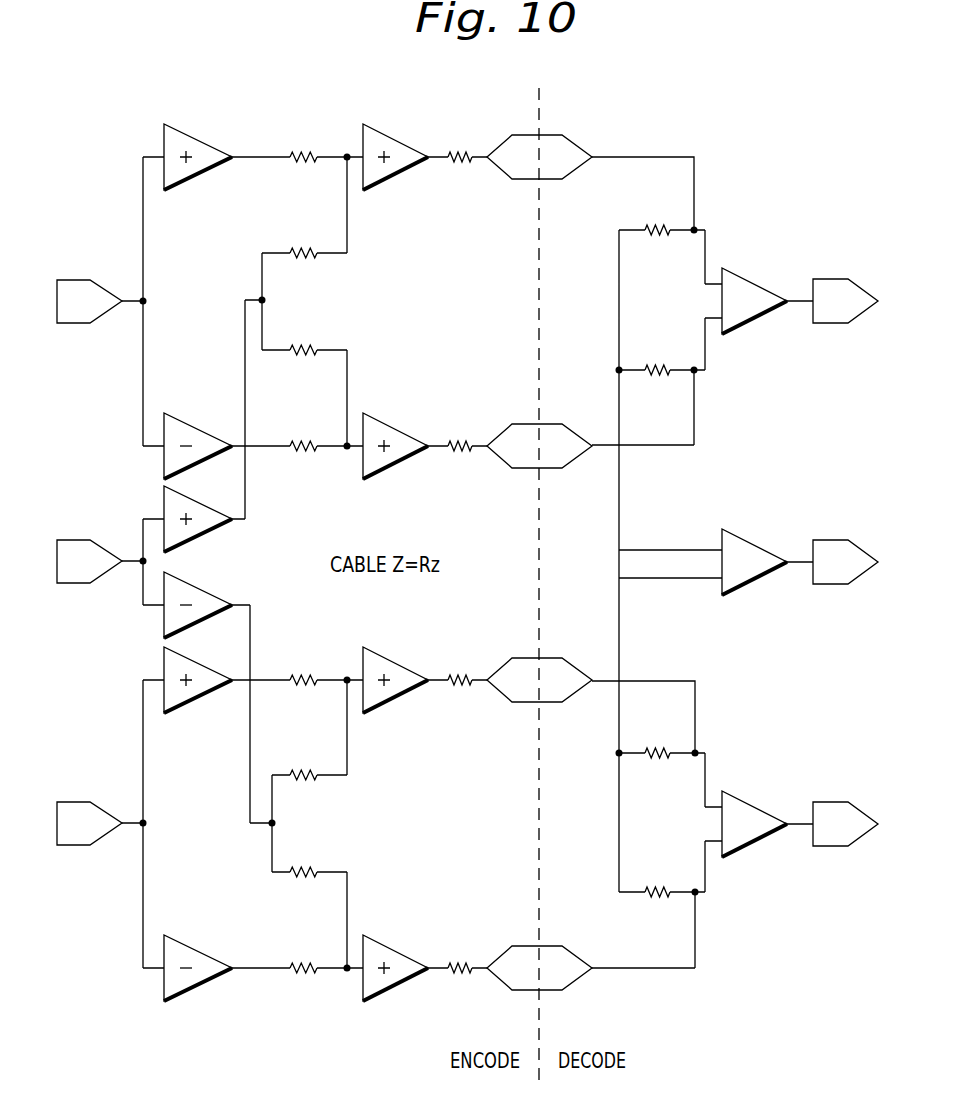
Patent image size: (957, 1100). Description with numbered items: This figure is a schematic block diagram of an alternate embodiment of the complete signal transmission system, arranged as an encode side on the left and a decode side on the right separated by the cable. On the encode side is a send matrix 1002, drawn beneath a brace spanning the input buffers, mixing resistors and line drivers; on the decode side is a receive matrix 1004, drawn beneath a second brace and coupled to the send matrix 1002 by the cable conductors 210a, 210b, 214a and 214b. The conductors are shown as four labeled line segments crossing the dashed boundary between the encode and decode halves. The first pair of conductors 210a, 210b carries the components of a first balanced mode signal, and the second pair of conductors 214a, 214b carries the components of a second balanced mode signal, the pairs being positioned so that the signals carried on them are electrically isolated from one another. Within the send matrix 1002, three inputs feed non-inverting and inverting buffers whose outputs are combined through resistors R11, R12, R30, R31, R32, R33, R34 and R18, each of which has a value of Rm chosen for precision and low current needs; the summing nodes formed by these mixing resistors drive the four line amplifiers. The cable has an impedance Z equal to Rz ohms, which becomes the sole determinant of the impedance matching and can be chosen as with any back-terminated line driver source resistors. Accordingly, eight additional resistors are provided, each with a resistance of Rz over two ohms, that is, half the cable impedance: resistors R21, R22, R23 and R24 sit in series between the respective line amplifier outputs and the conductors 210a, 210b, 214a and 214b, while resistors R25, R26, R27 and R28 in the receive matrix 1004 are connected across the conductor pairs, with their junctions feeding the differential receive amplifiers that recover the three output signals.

The send matrix 1002 is at (430, 90).
The receive matrix 1004 is at (882, 90).
The conductor 210a is at (548, 134).
The conductor 210b is at (548, 423).
The conductor 214a is at (548, 657).
The conductor 214b is at (548, 945).
The resistor R11 is at (301, 164).
The resistor R12 is at (301, 260).
The resistor R30 is at (301, 357).
The resistor R31 is at (301, 453).
The resistor R32 is at (301, 687).
The resistor R33 is at (301, 782).
The resistor R34 is at (301, 879).
The resistor R18 is at (301, 975).
The resistor R21 is at (458, 151).
The resistor R22 is at (458, 440).
The resistor R23 is at (458, 687).
The resistor R24 is at (458, 975).
The resistor R25 is at (660, 223).
The resistor R26 is at (660, 363).
The resistor R27 is at (657, 760).
The resistor R28 is at (657, 899).